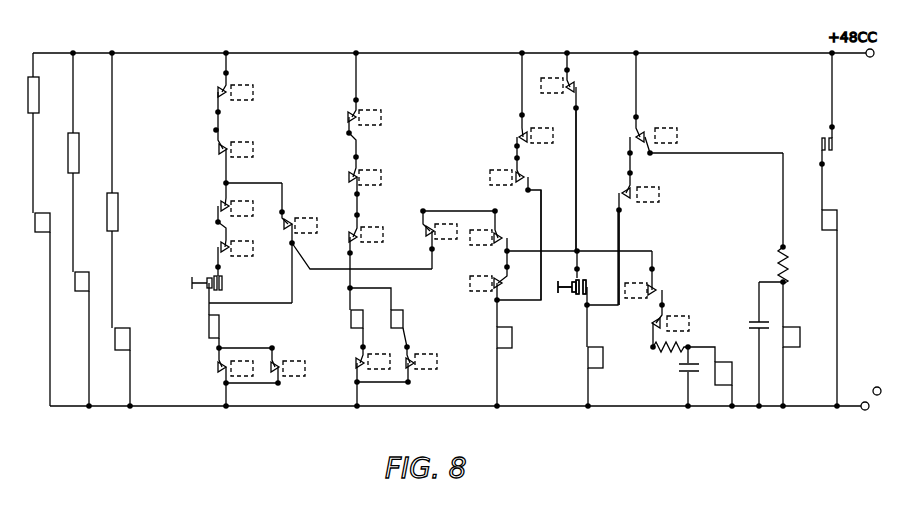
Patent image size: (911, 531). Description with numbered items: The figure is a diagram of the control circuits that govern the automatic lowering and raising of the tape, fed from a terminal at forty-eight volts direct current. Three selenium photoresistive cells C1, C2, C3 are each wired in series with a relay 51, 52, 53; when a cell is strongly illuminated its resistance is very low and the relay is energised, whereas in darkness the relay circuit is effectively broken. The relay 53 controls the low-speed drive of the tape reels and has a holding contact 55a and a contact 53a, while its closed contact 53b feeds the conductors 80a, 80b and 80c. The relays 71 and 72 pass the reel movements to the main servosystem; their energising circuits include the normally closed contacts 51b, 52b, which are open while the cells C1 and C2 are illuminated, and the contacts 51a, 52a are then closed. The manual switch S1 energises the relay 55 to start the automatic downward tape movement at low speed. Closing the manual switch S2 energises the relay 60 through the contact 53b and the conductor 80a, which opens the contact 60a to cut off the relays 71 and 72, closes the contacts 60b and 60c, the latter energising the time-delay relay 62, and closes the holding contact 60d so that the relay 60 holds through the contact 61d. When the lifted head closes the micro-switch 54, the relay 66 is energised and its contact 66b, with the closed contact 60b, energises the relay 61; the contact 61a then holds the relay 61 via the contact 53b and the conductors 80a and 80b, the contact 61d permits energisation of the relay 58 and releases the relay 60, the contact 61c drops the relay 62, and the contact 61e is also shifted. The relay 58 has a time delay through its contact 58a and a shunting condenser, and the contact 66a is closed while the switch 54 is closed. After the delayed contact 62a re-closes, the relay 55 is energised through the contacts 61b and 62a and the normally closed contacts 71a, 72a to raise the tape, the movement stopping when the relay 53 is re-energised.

The selenium photoresistive cell C1 is at (39, 84).
The selenium photoresistive cell C2 is at (79, 133).
The selenium photoresistive cell C3 is at (119, 193).
The relay 51 is at (38, 213).
The relay 52 is at (79, 272).
The relay 53 is at (120, 328).
The micro-switch 54 is at (830, 152).
The relay 55 is at (220, 325).
The relay 58 is at (253, 88).
The relay 60 is at (372, 227).
The relay 61 is at (376, 172).
The relay 62 is at (446, 222).
The relay 66 is at (253, 142).
The relay 71 is at (236, 380).
The relay 72 is at (295, 380).
The switch S1 is at (216, 290).
The manually operated switch S2 is at (582, 280).
The contact 51a is at (222, 202).
The normally closed contact 51b is at (358, 360).
The contact 52a is at (222, 246).
The normally closed contact 52b is at (412, 368).
The contact 53a is at (350, 112).
The contact 53b is at (574, 84).
The holding contact 55a is at (288, 220).
The contact 58a is at (220, 88).
The contact 60a is at (351, 234).
The contact 60b is at (524, 176).
The contact 60c is at (658, 288).
The holding contact 60d is at (623, 190).
The contact 61a is at (503, 284).
The contact 61b is at (503, 236).
The contact 61c is at (652, 326).
The contact 61d is at (644, 145).
The contact 61e is at (352, 180).
The contact 62a is at (428, 236).
The contact 66a is at (220, 152).
The contact 66b is at (520, 132).
The normally closed contact 71a is at (220, 370).
The normally closed contact 72a is at (276, 362).
The conductor 80a is at (592, 179).
The conductor 80b is at (555, 245).
The conductor 80c is at (642, 257).